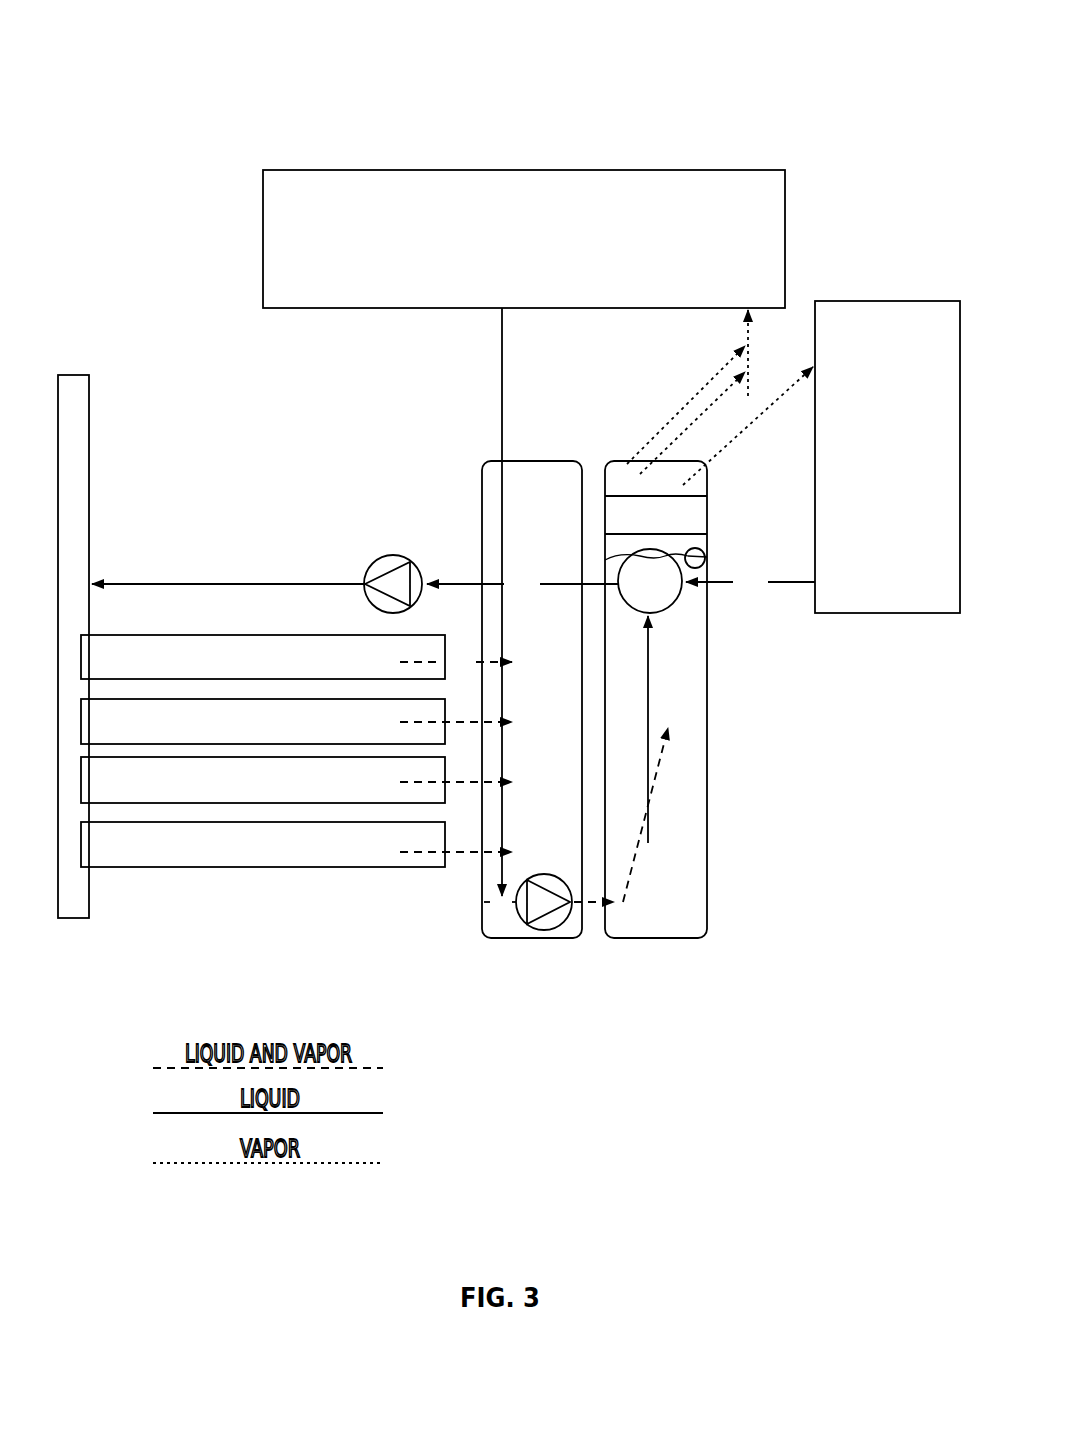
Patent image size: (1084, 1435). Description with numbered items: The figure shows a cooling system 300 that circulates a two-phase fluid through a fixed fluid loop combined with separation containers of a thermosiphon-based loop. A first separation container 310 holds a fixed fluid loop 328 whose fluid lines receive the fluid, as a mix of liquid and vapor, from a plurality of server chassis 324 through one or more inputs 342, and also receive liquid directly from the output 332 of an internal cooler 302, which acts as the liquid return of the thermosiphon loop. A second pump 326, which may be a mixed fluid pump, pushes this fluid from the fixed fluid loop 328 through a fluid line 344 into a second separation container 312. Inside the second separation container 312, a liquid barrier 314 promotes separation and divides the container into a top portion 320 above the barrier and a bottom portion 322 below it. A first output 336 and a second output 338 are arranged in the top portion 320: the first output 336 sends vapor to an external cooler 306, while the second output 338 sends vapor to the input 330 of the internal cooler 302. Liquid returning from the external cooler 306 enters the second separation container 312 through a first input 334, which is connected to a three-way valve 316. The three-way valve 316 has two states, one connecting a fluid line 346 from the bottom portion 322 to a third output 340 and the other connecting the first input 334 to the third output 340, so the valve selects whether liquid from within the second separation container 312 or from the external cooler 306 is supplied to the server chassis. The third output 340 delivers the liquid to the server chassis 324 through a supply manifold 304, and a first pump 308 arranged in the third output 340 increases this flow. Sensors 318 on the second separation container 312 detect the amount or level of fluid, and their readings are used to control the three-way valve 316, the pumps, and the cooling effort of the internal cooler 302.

The cooling system 300 is at (856, 90).
The internal cooler 302 is at (623, 255).
The supply manifold 304 is at (89, 357).
The external cooler 306 is at (940, 488).
The first pump 308 is at (396, 558).
The first separation container 310 is at (547, 980).
The second separation container 312 is at (672, 980).
The liquid barrier 314 is at (671, 530).
The three-way valve 316 is at (668, 595).
The sensors 318 is at (704, 556).
The top portion 320 is at (638, 485).
The bottom portion 322 is at (690, 764).
The server chassis 324 is at (316, 932).
The second pump 326 is at (544, 880).
The fixed fluid loop 328 is at (504, 760).
The input 330 is at (749, 335).
The output 332 is at (507, 437).
The first input 334 is at (767, 595).
The first output 336 is at (767, 442).
The second output 338 is at (700, 420).
The third output 340 is at (537, 599).
The inputs 342 is at (473, 675).
The fluid line 344 is at (610, 903).
The fluid line 346 is at (664, 743).